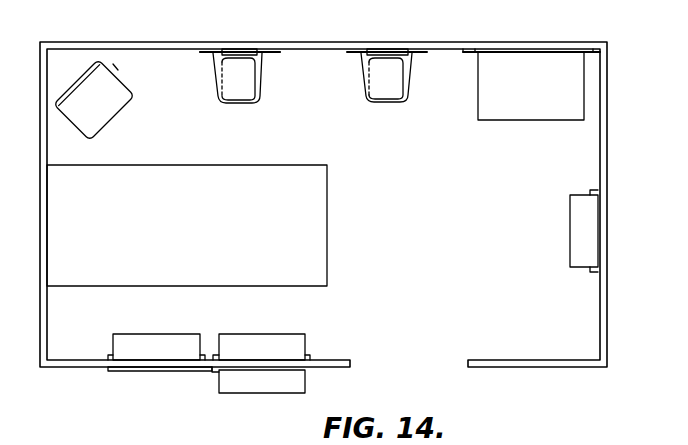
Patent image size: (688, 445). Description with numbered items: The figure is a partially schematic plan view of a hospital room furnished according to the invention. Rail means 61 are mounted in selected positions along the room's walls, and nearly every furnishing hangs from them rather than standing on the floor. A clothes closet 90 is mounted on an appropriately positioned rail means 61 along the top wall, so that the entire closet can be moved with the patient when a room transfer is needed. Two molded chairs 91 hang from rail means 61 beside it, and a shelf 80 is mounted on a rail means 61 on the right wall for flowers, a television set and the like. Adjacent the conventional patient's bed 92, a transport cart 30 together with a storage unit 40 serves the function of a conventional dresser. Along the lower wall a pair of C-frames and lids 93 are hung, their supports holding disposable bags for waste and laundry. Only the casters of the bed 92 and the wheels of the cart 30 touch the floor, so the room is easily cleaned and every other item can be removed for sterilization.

The transport cart 30 is at (120, 74).
The storage unit 40 is at (117, 110).
The rail means 61 is at (321, 57).
The shelf 80 is at (576, 231).
The clothes closet 90 is at (470, 53).
The chairs 91 is at (262, 98).
The patient's bed 92 is at (313, 220).
The C-frames and lids 93 is at (232, 340).